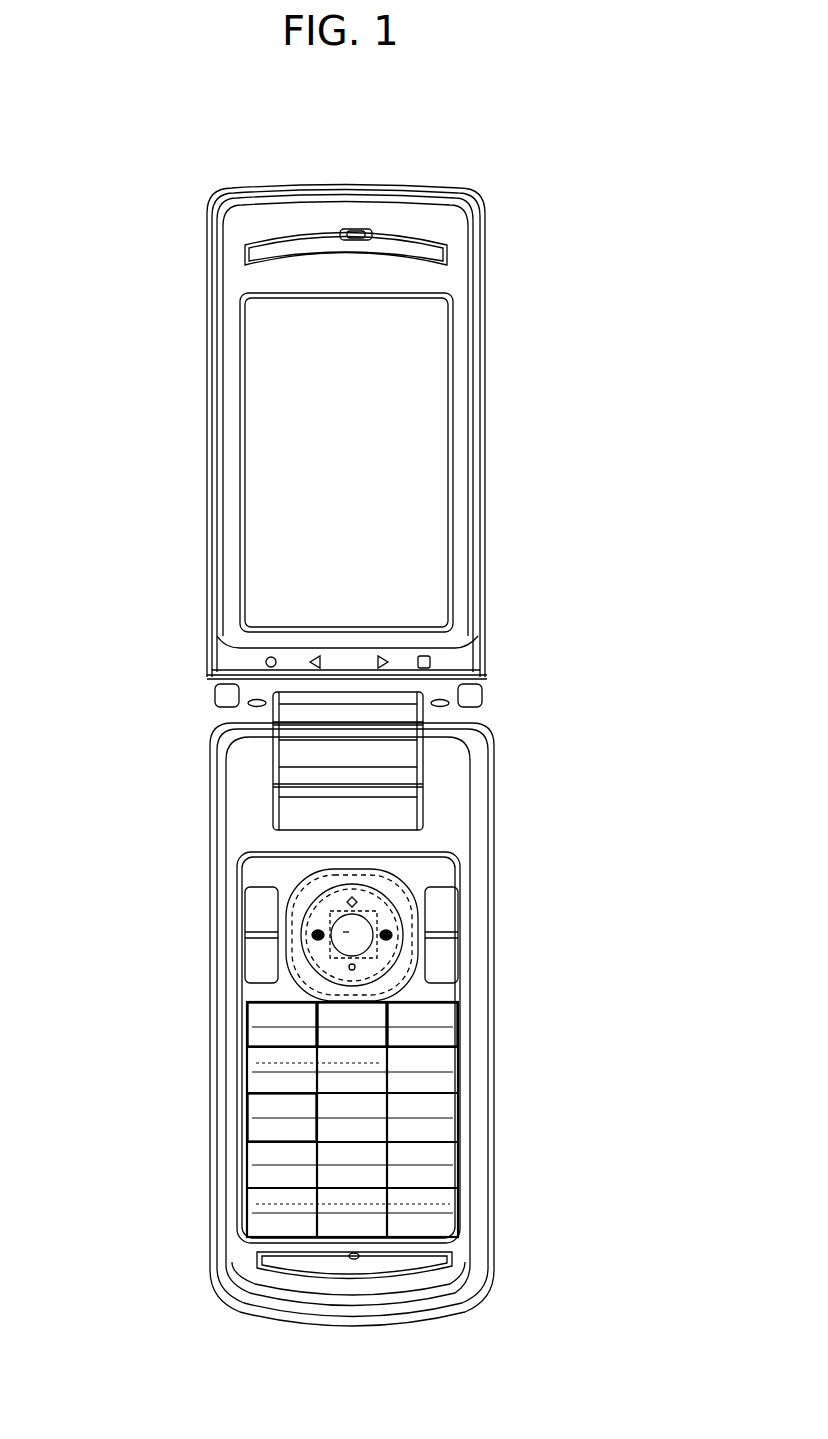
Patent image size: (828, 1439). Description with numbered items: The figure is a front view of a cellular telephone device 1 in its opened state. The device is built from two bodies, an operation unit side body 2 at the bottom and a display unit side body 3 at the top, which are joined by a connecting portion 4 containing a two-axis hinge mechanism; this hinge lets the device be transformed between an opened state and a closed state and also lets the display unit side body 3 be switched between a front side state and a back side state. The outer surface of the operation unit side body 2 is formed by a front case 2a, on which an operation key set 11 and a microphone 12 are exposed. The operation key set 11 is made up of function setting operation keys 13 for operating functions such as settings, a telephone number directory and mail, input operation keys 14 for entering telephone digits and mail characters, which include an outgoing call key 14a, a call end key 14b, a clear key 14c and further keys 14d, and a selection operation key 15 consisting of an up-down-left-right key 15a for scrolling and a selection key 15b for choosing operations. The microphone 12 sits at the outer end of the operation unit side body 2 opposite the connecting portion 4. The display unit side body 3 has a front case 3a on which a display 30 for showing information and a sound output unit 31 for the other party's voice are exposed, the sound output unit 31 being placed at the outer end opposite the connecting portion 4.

The cellular telephone device 1 is at (548, 160).
The operation unit side body 2 is at (525, 823).
The front case 2a is at (443, 797).
The display unit side body 3 is at (192, 439).
The front case 3a is at (483, 282).
The connecting portion 4 is at (194, 693).
The operation key set 11 is at (572, 827).
The microphone 12 is at (360, 1257).
The function setting operation keys 13 is at (257, 914).
The input operation keys 14 is at (440, 1017).
The outgoing call key 14a is at (283, 1017).
The call end key 14b is at (420, 1020).
The clear key 14c is at (366, 1018).
The key 14d is at (292, 1130).
The selection operation key 15 is at (373, 903).
The up-down-left-right key 15a is at (320, 900).
The selection key 15b is at (300, 930).
The display 30 is at (426, 442).
The sound output unit 31 is at (364, 235).